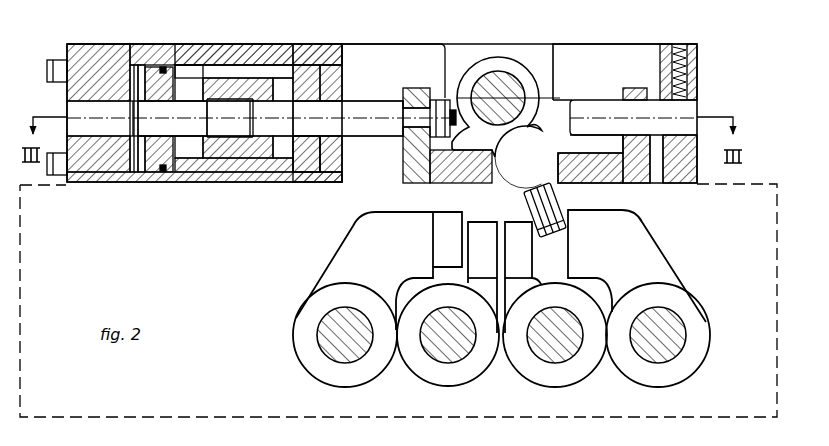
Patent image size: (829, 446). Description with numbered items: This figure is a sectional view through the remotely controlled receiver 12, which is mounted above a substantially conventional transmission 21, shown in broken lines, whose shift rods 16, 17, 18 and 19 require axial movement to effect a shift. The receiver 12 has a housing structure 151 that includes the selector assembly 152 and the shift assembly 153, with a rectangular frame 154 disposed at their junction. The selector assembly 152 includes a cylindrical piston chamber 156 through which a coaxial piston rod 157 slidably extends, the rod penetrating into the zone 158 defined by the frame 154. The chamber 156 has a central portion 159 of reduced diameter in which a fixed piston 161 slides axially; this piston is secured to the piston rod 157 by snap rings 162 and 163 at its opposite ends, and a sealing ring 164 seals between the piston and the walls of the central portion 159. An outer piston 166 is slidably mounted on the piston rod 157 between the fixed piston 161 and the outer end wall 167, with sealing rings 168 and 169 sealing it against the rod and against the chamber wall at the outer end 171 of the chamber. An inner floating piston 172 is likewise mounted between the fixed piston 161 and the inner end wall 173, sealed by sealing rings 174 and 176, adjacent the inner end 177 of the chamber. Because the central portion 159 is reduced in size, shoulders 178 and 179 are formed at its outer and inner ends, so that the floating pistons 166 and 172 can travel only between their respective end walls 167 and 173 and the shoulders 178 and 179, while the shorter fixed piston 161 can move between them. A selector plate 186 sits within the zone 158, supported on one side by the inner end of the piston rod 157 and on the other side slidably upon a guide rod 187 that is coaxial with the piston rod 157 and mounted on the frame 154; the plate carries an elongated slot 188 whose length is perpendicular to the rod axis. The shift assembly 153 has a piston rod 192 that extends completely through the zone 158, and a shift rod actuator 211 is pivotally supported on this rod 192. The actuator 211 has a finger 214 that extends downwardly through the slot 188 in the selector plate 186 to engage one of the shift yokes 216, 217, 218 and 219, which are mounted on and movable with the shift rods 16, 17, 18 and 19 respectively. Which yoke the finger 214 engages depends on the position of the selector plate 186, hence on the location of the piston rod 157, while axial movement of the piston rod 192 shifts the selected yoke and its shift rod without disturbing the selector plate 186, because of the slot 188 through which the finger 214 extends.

The receiver 12 is at (694, 29).
The shift rod 16 is at (377, 297).
The shift rod 17 is at (453, 294).
The shift rod 18 is at (555, 297).
The shift rod 19 is at (653, 296).
The transmission 21 is at (734, 182).
The housing structure 151 is at (700, 83).
The selector assembly 152 is at (97, 32).
The shift assembly 153 is at (590, 42).
The rectangular frame 154 is at (345, 46).
The cylindrical piston chamber 156 is at (283, 175).
The piston rod 157 is at (365, 104).
The zone 158 is at (405, 58).
The central portion 159 is at (215, 64).
The fixed piston 161 is at (305, 62).
The snap ring 162 is at (262, 65).
The snap ring 163 is at (296, 102).
The sealing ring 164 is at (248, 78).
The outer piston 166 is at (150, 67).
The outer end wall 167 is at (133, 66).
The sealing ring 168 is at (152, 100).
The sealing ring 169 is at (165, 67).
The outer end 171 is at (133, 172).
The inner floating piston 172 is at (337, 172).
The inner end wall 173 is at (342, 62).
The sealing ring 174 is at (343, 152).
The sealing ring 176 is at (308, 183).
The inner end 177 is at (322, 80).
The shoulder 178 is at (202, 66).
The shoulder 179 is at (282, 72).
The selector plate 186 is at (410, 157).
The guide rod 187 is at (590, 107).
The elongated slot 188 is at (498, 182).
The piston rod 192 is at (488, 94).
The shift rod actuator 211 is at (513, 52).
The finger 214 is at (557, 206).
The shift yoke 216 is at (424, 221).
The shift yoke 217 is at (488, 228).
The shift yoke 218 is at (524, 233).
The shift yoke 219 is at (628, 222).